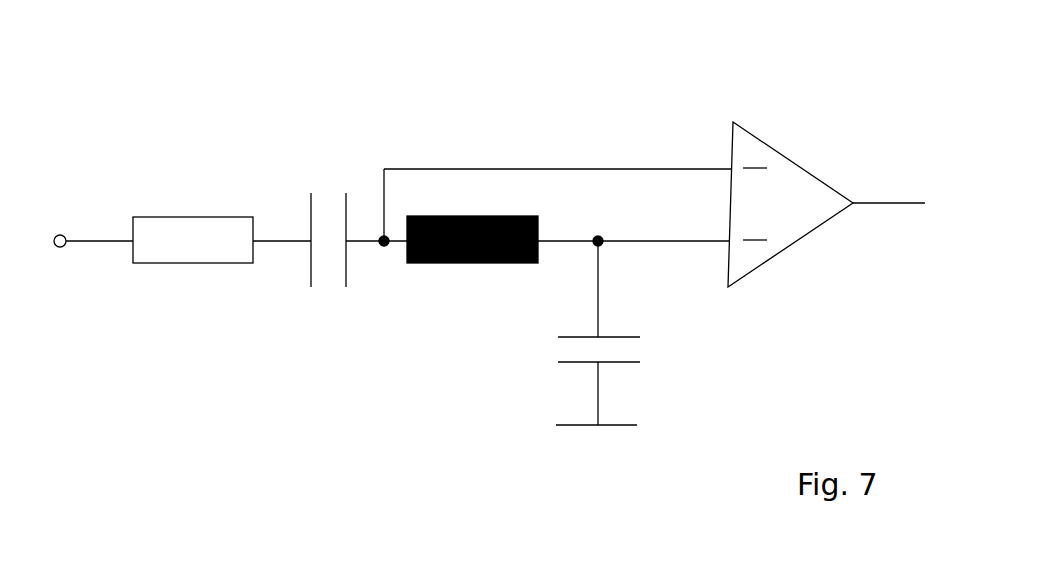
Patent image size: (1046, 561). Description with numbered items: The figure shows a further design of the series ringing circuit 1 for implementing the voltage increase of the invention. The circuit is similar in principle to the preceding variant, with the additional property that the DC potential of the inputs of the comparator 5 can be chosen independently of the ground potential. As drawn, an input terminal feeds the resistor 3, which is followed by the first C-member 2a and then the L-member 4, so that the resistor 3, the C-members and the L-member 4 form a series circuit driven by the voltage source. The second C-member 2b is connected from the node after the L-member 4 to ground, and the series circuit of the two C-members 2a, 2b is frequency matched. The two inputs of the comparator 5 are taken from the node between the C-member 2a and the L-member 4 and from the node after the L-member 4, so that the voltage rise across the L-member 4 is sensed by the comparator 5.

The series ringing circuit 1 is at (504, 20).
The C-member 2a is at (328, 260).
The C-member 2b is at (625, 379).
The resistor 3 is at (199, 252).
The L-member 4 is at (461, 263).
The comparator 5 is at (780, 148).